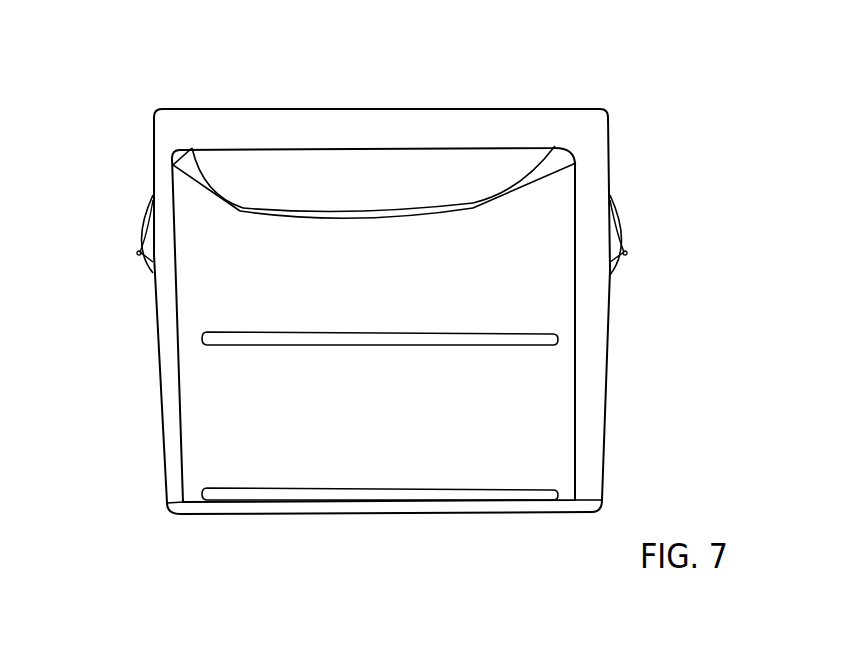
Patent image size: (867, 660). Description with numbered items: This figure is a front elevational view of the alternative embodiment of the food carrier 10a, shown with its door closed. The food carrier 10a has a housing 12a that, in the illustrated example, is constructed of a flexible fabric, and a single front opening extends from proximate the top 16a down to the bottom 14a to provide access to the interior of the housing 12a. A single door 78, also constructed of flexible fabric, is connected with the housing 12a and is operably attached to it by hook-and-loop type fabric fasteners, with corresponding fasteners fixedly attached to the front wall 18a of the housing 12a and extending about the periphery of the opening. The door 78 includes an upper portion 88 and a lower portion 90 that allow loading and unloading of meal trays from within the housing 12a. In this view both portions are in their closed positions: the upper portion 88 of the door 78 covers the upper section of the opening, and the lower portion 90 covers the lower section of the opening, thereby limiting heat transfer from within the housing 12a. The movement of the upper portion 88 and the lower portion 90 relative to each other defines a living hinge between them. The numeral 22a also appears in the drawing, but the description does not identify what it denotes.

The food carrier 10a is at (655, 78).
The housing 12a is at (494, 108).
The bottom 14a is at (273, 515).
The top 16a is at (358, 108).
The front wall 18a is at (162, 402).
The front panel 22a is at (152, 335).
The door 78 is at (577, 293).
The upper portion 88 is at (512, 155).
The lower portion 90 is at (562, 467).